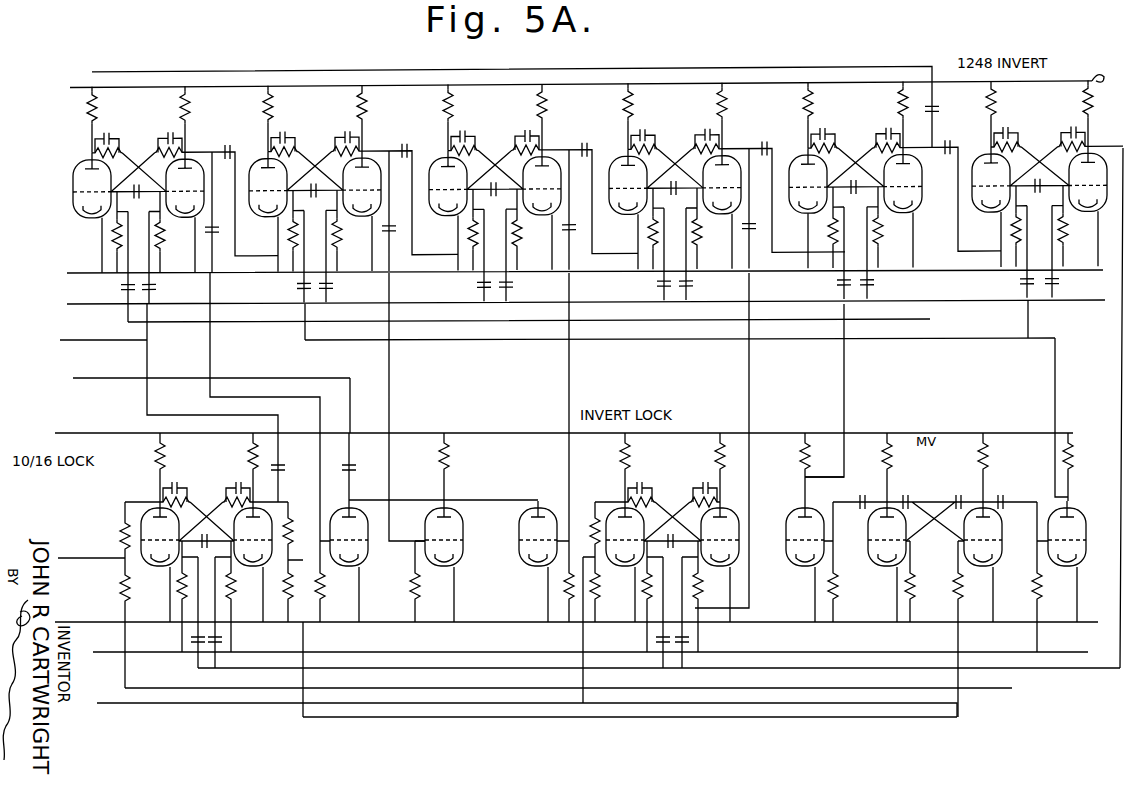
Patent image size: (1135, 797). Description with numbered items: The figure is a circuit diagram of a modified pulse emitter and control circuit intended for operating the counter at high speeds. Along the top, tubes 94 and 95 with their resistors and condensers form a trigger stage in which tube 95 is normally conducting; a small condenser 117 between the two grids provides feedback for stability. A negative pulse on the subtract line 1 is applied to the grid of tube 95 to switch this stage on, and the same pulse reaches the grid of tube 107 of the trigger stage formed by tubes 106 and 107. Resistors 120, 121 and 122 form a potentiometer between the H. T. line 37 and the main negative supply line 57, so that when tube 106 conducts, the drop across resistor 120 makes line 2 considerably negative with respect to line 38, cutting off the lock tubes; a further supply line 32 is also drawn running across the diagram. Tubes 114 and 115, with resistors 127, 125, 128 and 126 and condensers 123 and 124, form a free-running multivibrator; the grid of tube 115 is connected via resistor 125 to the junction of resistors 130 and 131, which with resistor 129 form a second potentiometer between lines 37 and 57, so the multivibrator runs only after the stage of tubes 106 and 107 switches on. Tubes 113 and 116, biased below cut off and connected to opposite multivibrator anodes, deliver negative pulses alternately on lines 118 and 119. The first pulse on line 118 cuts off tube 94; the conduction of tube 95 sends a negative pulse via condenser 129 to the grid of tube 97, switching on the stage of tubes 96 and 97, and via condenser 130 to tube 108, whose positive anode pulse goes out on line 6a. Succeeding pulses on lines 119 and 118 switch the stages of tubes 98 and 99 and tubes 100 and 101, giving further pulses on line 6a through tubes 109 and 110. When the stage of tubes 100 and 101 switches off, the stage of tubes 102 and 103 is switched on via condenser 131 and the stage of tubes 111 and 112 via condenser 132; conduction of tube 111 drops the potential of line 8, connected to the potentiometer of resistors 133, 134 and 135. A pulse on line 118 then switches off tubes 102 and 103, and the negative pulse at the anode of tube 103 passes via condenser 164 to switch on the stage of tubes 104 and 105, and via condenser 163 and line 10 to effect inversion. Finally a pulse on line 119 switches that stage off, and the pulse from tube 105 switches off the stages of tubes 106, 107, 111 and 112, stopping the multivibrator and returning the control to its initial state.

The subtract line 1 is at (72, 338).
The line 2 is at (74, 560).
The line 6a is at (108, 376).
The line 8 is at (112, 702).
The line 10 is at (130, 73).
The bus line 32 is at (1072, 312).
The H. T. line 37 is at (1105, 86).
The line 38 is at (1072, 276).
The main negative supply line 57 is at (794, 692).
The tube 94 is at (92, 228).
The tube 95 is at (186, 226).
The tube 96 is at (268, 228).
The tube 97 is at (363, 226).
The tube 98 is at (448, 228).
The tube 99 is at (543, 226).
The tube 100 is at (628, 228).
The tube 101 is at (723, 226).
The tube 102 is at (800, 228).
The tube 103 is at (916, 228).
The tube 104 is at (990, 228).
The tube 105 is at (1098, 226).
The tube 106 is at (158, 576).
The tube 107 is at (255, 576).
The tube 108 is at (347, 576).
The tube 109 is at (442, 576).
The tube 110 is at (536, 576).
The tube 111 is at (622, 576).
The tube 112 is at (722, 576).
The tube 113 is at (804, 576).
The tube 114 is at (886, 576).
The tube 115 is at (980, 576).
The tube 116 is at (1064, 576).
The condenser 117 is at (138, 196).
The line 118 is at (268, 324).
The line 119 is at (316, 340).
The resistor 120 is at (156, 460).
The resistor 121 is at (120, 524).
The resistor 122 is at (120, 584).
The condenser 123 is at (896, 498).
The condenser 124 is at (944, 498).
The resistor 125 is at (961, 622).
The resistor 126 is at (915, 584).
The resistor 127 is at (882, 450).
The resistor 128 is at (1002, 450).
The condenser 129 is at (220, 150).
The condenser 130 is at (226, 230).
The condenser 131 is at (754, 144).
The condenser 132 is at (764, 230).
The resistor 133 is at (620, 460).
The resistor 134 is at (590, 524).
The resistor 135 is at (604, 598).
The condenser 163 is at (935, 116).
The condenser 164 is at (944, 156).